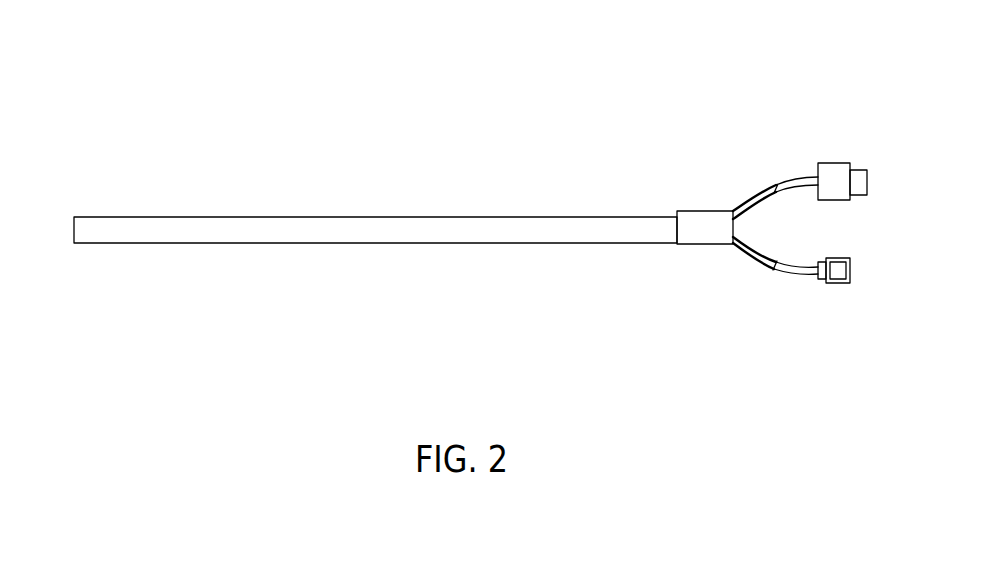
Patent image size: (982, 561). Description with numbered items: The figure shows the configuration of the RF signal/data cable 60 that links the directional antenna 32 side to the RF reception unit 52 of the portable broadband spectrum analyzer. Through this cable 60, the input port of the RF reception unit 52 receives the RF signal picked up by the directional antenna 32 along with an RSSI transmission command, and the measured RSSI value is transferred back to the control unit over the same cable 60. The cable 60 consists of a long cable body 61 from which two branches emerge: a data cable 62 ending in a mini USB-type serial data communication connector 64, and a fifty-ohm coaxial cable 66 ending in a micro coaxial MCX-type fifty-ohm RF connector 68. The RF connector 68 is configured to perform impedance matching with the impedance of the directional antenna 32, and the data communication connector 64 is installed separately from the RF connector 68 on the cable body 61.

The directional antenna 32 is at (84, 57).
The RF reception unit 52 is at (860, 52).
The RF signal/data cable 60 is at (269, 276).
The cable body 61 is at (378, 243).
The data cable 62 is at (757, 197).
The data communication connector 64 is at (832, 163).
The coaxial cable 66 is at (754, 262).
The RF connector 68 is at (843, 283).